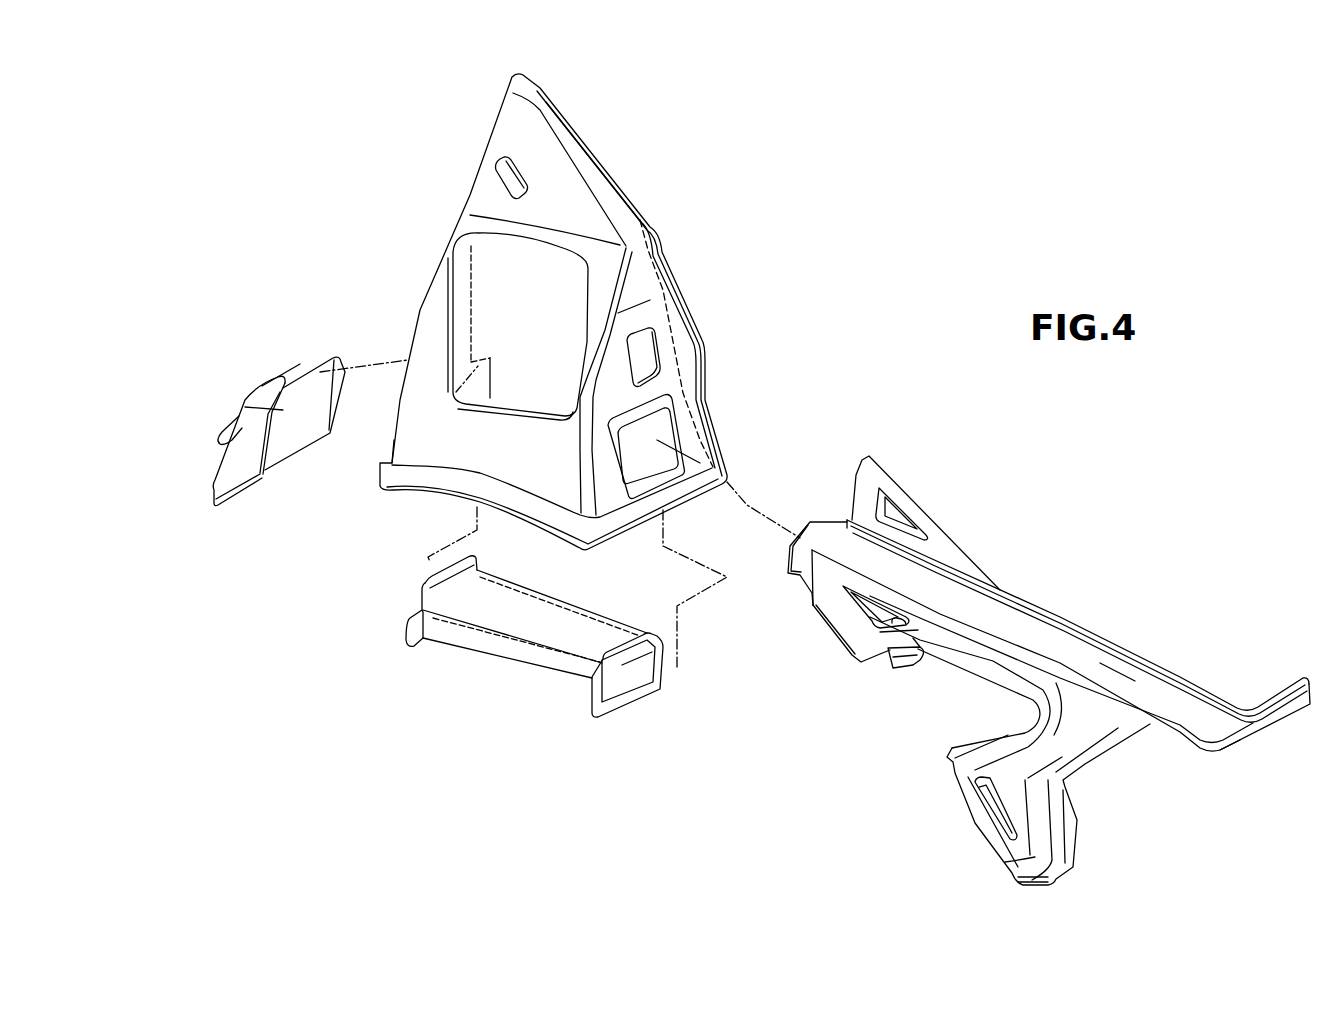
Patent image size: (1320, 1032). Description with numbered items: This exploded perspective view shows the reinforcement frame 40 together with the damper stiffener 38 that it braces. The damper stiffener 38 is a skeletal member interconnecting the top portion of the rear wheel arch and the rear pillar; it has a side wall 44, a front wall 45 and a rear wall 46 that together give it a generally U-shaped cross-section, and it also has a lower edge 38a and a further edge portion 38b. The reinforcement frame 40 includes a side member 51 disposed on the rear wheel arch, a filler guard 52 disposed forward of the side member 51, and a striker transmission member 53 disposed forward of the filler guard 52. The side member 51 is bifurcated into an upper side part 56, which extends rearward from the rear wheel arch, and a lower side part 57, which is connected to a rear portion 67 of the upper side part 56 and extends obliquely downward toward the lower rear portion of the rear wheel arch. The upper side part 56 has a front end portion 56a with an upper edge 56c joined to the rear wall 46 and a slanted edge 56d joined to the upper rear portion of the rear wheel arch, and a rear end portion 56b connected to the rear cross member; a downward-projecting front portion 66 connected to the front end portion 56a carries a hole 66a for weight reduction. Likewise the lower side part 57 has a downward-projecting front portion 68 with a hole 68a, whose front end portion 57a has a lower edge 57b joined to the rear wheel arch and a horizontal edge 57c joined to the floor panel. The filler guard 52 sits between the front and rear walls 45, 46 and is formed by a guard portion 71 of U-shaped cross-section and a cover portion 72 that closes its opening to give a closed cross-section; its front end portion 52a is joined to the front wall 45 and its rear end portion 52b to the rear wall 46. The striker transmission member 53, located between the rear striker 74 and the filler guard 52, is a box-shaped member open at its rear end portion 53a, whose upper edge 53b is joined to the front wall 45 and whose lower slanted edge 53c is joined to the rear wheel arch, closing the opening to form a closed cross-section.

The damper stiffener 38 is at (560, 372).
The lower edge 38a is at (533, 510).
The side edge rib of pillar garnish 38b is at (567, 133).
The reinforcement frame 40 is at (895, 238).
The side wall 44 is at (448, 450).
The front wall 45 is at (458, 317).
The rear wall 46 is at (665, 430).
The side member 51 is at (1002, 670).
The filler guard 52 is at (502, 663).
The front end portion 52a is at (428, 592).
The rear end portion 52b is at (638, 697).
The striker transmission member 53 is at (255, 434).
The rear end portion 53a is at (352, 503).
The upper edge 53b is at (277, 445).
The lower slanted edge 53c is at (240, 493).
The upper side part 56 is at (1002, 611).
The front end portion 56a is at (840, 542).
The rear end portion 56b is at (1190, 717).
The upper edge 56c is at (800, 568).
The slanted edge 56d is at (843, 630).
The lower side part 57 is at (994, 707).
The front end portion 57a is at (840, 790).
The lower edge 57b is at (965, 827).
The horizontal edge 57c is at (1007, 883).
The front portion 66 is at (872, 637).
The hole 66a is at (898, 625).
The rear portion 67 is at (1128, 688).
The front portion 68 is at (1015, 813).
The hole 68a is at (992, 786).
The guard portion 71 is at (547, 660).
The cover portion 72 is at (487, 608).
The rear striker 74 is at (218, 428).